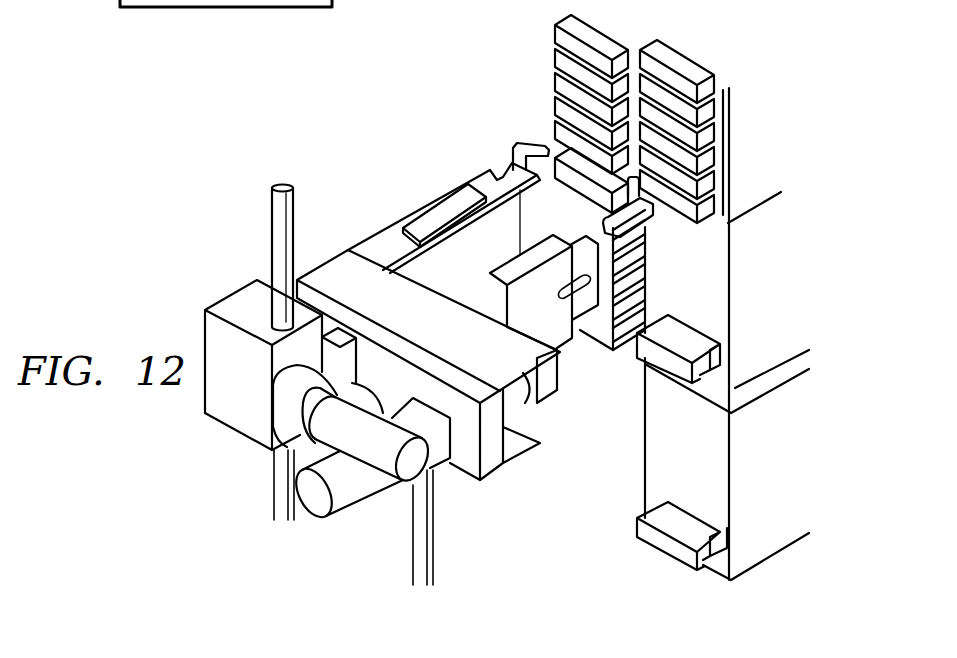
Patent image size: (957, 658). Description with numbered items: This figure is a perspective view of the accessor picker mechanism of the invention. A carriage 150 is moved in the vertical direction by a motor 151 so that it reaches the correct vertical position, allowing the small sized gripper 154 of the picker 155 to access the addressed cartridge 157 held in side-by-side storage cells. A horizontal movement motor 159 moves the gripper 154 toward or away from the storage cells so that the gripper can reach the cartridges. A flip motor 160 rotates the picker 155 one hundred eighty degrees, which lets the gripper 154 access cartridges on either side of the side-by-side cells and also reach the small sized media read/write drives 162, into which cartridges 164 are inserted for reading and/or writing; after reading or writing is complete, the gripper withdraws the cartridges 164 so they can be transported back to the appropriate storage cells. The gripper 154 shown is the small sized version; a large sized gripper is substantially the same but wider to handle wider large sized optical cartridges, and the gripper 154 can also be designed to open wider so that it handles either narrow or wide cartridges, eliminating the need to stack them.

The carriage 150 is at (255, 432).
The motor 151 is at (405, 478).
The small sized gripper 154 is at (518, 143).
The picker 155 is at (458, 280).
The cartridge 157 is at (585, 53).
The horizontal movement motor 159 is at (517, 398).
The flip motor 160 is at (315, 507).
The small sized media read/write drive 162 is at (740, 392).
The cartridge 164 is at (643, 348).